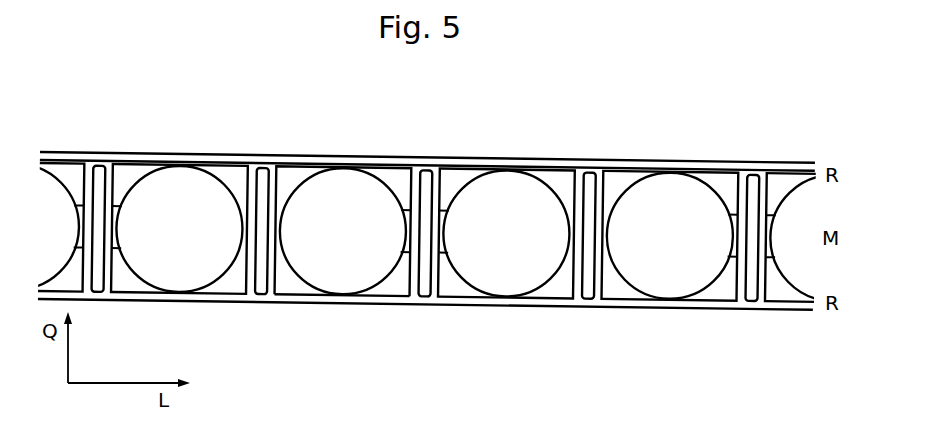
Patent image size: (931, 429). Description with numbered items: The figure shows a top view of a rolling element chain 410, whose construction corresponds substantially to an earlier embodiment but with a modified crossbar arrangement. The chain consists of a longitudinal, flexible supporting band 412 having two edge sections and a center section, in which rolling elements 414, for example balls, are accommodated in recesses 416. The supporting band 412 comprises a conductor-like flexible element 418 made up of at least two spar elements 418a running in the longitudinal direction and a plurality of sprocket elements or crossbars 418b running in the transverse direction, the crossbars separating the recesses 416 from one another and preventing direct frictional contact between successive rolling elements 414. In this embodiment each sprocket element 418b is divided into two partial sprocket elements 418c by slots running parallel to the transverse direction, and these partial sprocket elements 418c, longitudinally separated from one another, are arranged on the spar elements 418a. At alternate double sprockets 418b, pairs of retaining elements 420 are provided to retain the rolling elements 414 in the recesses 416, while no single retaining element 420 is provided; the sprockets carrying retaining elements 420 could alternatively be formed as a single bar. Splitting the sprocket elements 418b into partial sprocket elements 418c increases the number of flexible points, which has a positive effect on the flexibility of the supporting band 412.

The rolling element chain 410 is at (138, 76).
The supporting band 412 is at (70, 167).
The rolling elements 414 is at (680, 263).
The recesses 416 is at (292, 182).
The flexible element 418 is at (195, 166).
The spar elements 418a is at (298, 298).
The sprocket elements or crossbars 418b is at (433, 270).
The partial sprocket elements 418c is at (579, 273).
The retaining elements 420 is at (454, 182).